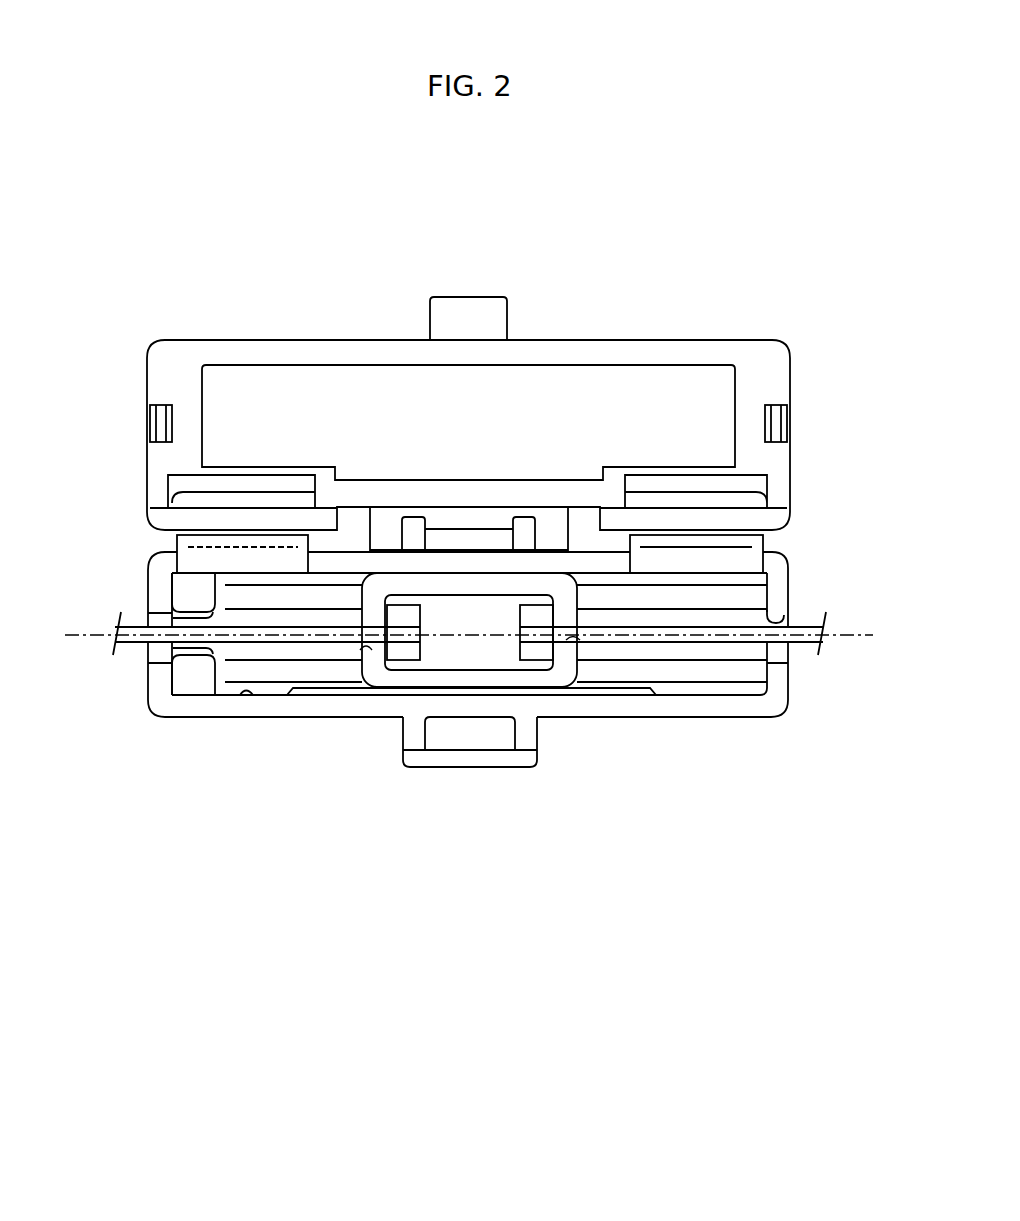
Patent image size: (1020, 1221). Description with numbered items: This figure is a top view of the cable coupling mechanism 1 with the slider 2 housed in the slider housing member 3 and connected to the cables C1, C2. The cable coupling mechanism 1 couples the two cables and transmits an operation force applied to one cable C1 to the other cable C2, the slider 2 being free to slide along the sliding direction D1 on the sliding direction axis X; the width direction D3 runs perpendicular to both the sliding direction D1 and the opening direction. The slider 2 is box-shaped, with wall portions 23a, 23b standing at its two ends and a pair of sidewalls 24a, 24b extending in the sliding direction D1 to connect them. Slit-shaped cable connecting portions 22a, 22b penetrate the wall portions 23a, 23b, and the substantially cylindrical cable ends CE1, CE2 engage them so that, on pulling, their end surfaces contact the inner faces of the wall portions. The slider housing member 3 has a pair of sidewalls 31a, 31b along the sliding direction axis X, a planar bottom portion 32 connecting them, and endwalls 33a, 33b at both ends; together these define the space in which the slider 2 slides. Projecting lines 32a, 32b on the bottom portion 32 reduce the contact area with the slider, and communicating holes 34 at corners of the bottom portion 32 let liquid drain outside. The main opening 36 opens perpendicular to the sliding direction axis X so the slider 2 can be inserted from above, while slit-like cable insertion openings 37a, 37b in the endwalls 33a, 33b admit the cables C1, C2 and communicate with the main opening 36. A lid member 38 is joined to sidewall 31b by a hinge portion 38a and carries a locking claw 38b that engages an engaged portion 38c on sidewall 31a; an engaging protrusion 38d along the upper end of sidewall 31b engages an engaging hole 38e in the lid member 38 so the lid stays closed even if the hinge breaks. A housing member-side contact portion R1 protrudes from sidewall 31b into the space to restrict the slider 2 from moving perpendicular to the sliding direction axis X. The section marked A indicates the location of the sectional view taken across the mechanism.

The cable coupling mechanism 1 is at (818, 258).
The slider 2 is at (473, 566).
The slider housing member 3 is at (786, 718).
The cable connecting portion 22a is at (573, 641).
The cable connecting portion 22b is at (367, 648).
The wall portion 23a is at (563, 613).
The wall portion 23b is at (375, 600).
The sidewall 24a is at (418, 677).
The sidewall 24b is at (410, 590).
The sidewall 31a is at (648, 707).
The sidewall 31b is at (548, 562).
The bottom portion 32 is at (752, 652).
The projecting line 32a is at (742, 675).
The projecting line 32b is at (740, 597).
The endwall 33a is at (782, 678).
The endwall 33b is at (163, 680).
The communicating hole 34 is at (173, 583).
The main opening 36 is at (252, 693).
The cable insertion opening 37a is at (790, 622).
The cable insertion opening 37b is at (148, 653).
The lid member 38 is at (237, 387).
The hinge portion 38a is at (438, 520).
The locking claw 38b is at (451, 310).
The engaged portion 38c is at (483, 758).
The engaging protrusion 38d is at (242, 543).
The engaging hole 38e is at (183, 502).
The cable C1 is at (805, 640).
The cable C2 is at (133, 630).
The cable end CE1 is at (532, 650).
The cable end CE2 is at (397, 650).
The sliding direction D1 is at (795, 948).
The width direction D3 is at (43, 552).
The housing member-side contact portion R1 is at (613, 693).
The sliding direction axis X is at (873, 635).
The section line A- A is at (667, 263).